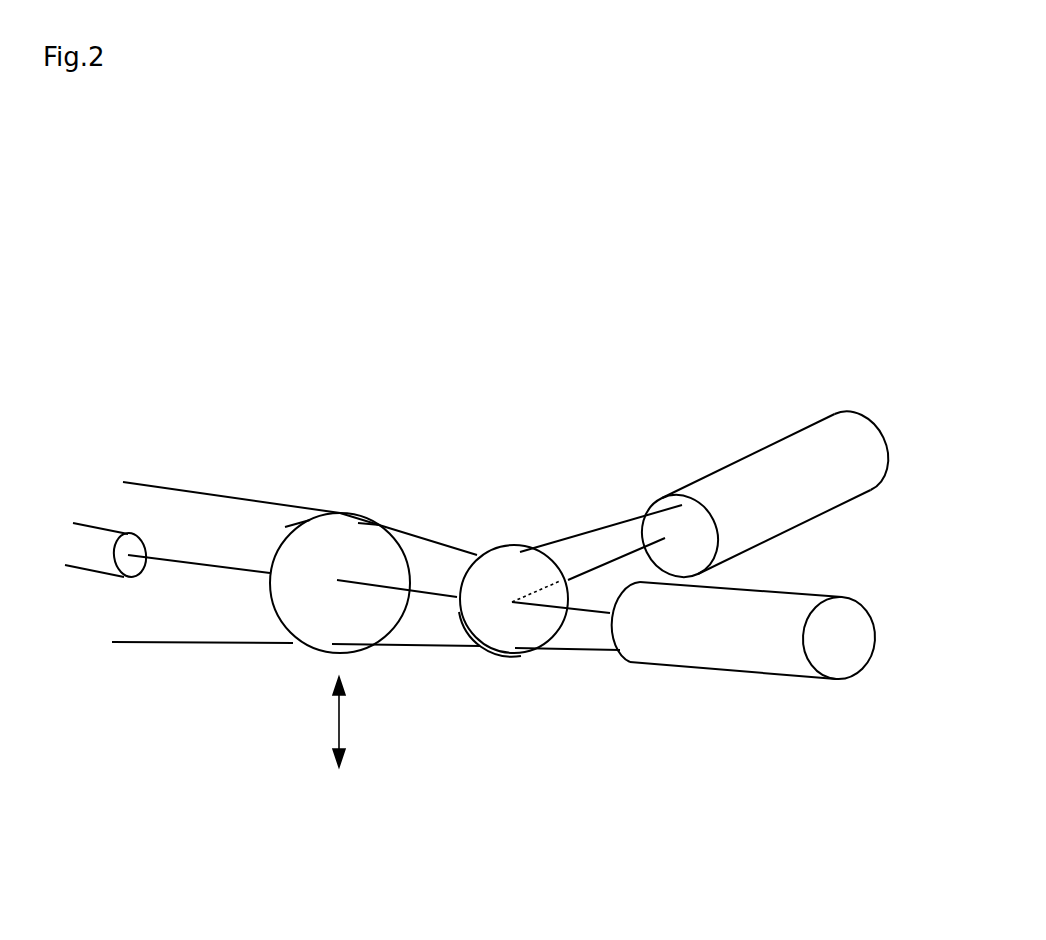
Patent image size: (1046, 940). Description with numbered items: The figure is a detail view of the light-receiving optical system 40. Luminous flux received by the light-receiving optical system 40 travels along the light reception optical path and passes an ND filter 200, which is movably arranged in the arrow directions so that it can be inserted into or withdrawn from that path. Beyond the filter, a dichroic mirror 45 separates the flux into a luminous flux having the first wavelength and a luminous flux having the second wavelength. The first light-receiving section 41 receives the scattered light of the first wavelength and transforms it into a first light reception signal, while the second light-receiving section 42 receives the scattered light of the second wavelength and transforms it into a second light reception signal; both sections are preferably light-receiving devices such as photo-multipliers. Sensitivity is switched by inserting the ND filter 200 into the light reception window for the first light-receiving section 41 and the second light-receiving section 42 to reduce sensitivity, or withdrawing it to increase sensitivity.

The light-receiving optical system 40 is at (95, 537).
The ND filter 200 is at (338, 535).
The dichroic mirror 45 is at (515, 577).
The second light-receiving section 42 is at (732, 473).
The first light-receiving section 41 is at (737, 657).